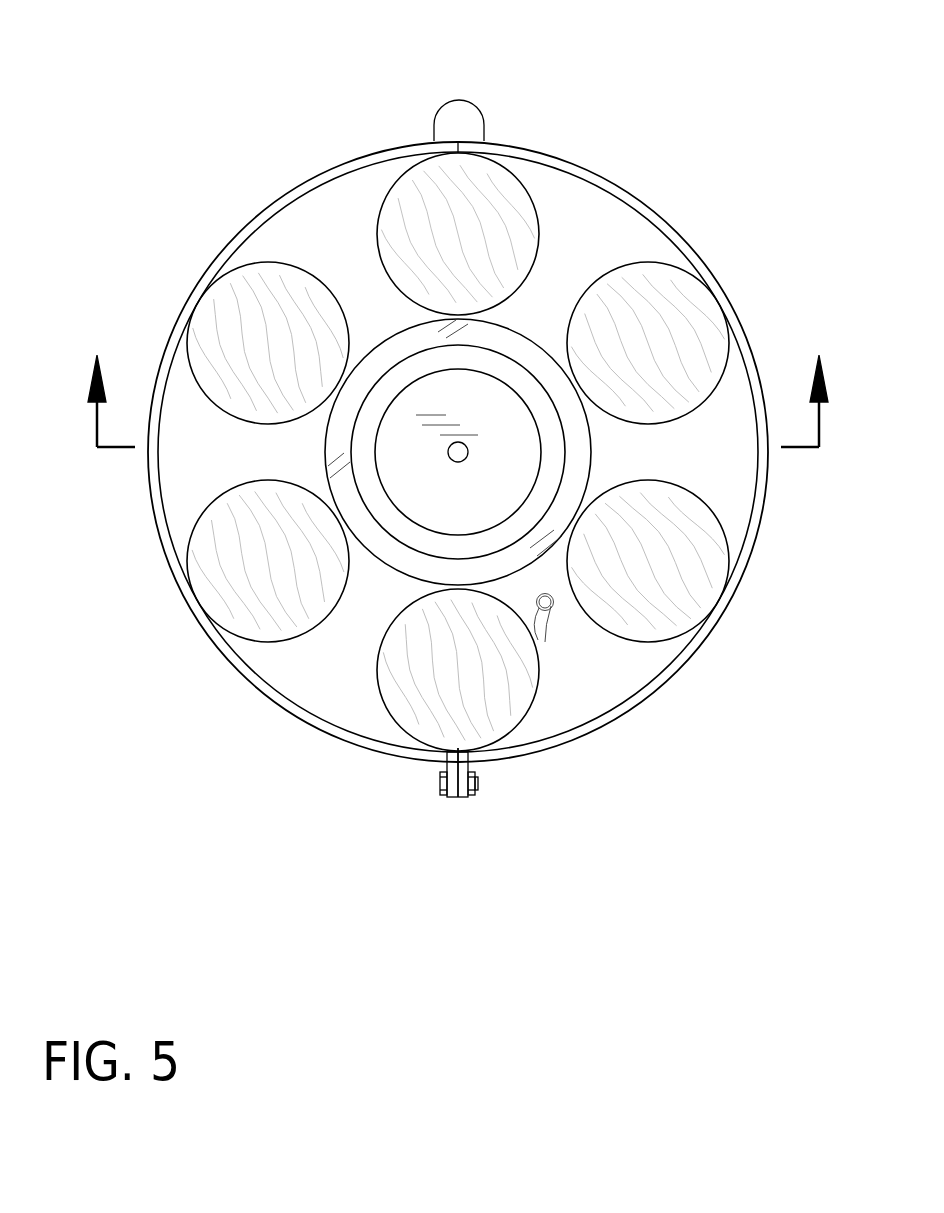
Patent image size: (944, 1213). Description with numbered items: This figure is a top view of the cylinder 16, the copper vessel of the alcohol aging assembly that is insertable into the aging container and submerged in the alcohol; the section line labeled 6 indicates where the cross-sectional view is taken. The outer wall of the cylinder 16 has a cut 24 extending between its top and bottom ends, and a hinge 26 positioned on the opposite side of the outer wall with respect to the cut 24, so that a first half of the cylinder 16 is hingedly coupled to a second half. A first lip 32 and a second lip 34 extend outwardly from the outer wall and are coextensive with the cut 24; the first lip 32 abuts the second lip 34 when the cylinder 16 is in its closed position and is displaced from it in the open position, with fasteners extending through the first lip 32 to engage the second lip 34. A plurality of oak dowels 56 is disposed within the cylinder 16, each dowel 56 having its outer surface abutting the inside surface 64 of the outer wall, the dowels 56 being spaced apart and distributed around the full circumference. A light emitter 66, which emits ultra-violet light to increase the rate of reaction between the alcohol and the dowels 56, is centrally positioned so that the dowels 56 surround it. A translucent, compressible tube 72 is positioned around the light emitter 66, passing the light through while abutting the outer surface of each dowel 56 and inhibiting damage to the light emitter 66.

The cylinder 16 is at (277, 197).
The cut 24 is at (457, 752).
The hinge 26 is at (458, 99).
The first lip 32 is at (452, 798).
The second lip 34 is at (465, 798).
The dowels 56 is at (398, 190).
The inside surface 64 is at (757, 425).
The light emitter 66 is at (492, 382).
The tube 72 is at (323, 448).
The section line 6- 6 is at (458, 397).